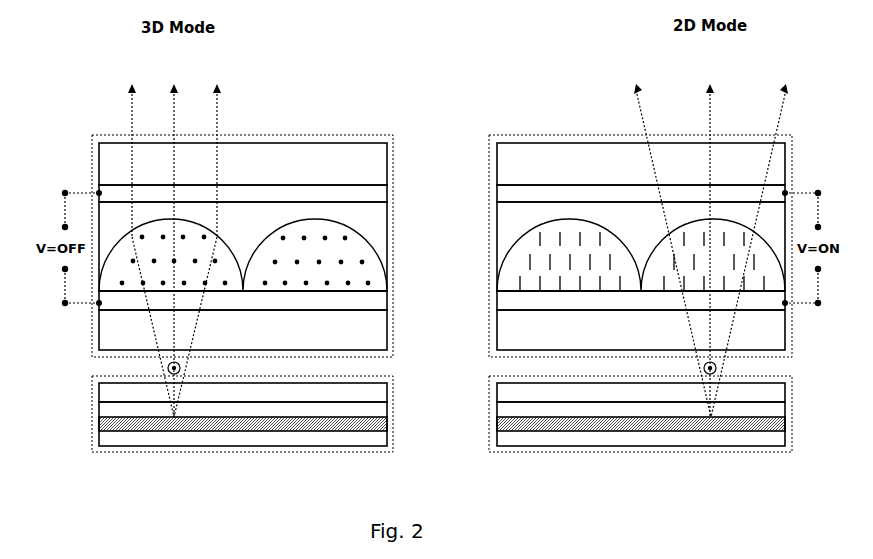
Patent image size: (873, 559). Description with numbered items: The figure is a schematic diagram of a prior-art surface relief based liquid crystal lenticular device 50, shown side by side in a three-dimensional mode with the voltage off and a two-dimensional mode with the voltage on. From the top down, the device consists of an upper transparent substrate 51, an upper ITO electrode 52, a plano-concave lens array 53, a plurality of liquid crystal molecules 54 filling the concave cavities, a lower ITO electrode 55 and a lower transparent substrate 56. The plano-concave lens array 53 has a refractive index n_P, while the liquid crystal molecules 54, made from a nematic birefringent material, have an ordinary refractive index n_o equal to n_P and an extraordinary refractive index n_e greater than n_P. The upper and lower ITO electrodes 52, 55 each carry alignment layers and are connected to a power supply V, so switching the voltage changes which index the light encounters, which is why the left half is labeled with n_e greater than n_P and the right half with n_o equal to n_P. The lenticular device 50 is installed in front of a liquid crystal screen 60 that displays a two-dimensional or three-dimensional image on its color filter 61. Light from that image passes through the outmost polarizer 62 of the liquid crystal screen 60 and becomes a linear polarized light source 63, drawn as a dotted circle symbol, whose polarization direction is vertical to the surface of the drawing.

The surface relief based liquid crystal lenticular device 50 is at (481, 126).
The upper transparent substrate 51 is at (489, 161).
The upper ITO electrode 52 is at (489, 189).
The plano-concave lens array 53 is at (489, 222).
The liquid crystal molecules 54 is at (518, 260).
The lower ITO electrode 55 is at (489, 297).
The lower transparent substrate 56 is at (489, 329).
The liquid crystal screen 60 is at (476, 454).
The color filter 61 is at (489, 419).
The outmost polarizer 62 is at (489, 387).
The linear polarized light source 63 is at (181, 369).